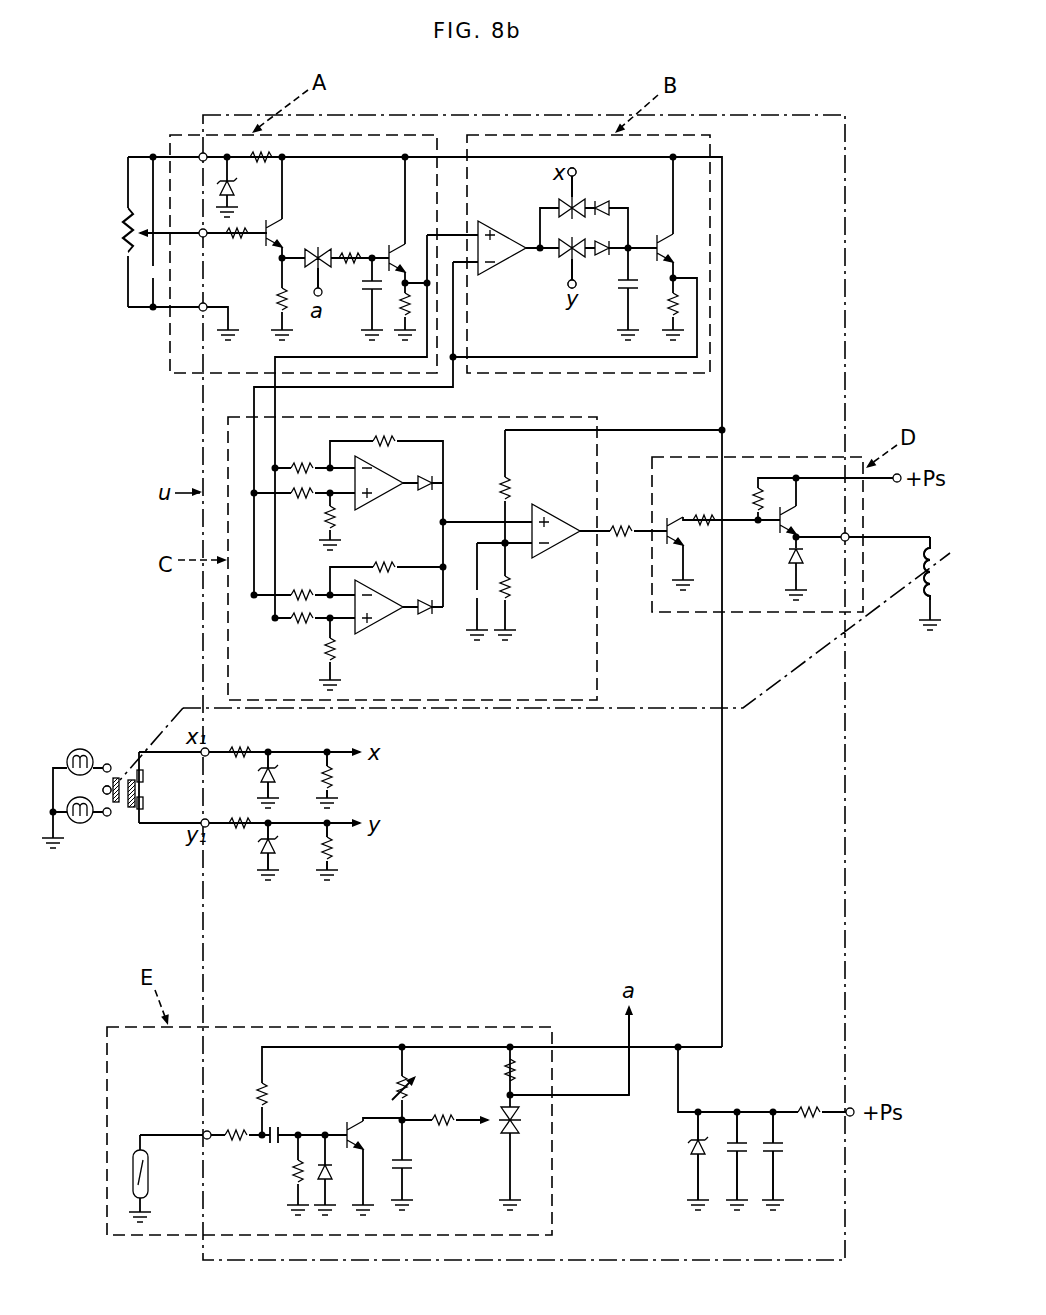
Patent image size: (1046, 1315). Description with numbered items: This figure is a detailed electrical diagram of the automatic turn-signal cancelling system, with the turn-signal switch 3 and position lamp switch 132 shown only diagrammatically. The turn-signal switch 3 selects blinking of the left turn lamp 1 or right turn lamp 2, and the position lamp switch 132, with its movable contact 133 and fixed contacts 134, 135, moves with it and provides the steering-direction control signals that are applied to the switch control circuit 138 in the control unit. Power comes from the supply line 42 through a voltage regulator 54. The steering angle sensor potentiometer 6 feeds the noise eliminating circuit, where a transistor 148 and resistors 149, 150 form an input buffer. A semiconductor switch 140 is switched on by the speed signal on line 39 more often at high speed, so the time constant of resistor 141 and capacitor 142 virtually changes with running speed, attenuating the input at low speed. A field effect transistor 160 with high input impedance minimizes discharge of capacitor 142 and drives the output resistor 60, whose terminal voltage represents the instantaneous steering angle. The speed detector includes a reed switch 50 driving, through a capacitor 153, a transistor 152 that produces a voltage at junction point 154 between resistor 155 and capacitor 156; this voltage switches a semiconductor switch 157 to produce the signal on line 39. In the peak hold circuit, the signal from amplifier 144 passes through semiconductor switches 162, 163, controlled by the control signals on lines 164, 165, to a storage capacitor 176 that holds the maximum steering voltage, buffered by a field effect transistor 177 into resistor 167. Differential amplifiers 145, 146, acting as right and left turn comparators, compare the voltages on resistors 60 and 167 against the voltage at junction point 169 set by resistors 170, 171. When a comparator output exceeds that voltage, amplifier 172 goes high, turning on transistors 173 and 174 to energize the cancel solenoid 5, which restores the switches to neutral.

The steering angle sensor potentiometer 6 is at (120, 247).
The transistor 148 is at (265, 229).
The resistor 149 is at (234, 238).
The resistor 150 is at (279, 300).
The semiconductor switch 140 is at (318, 250).
The resistor 141 is at (351, 252).
The field effect transistor 160 is at (389, 250).
The line 39 is at (320, 289).
The capacitor 142 is at (371, 292).
The output resistor 60 is at (405, 310).
The amplifier 144 is at (500, 213).
The line 164 is at (578, 172).
The semiconductor switch 162 is at (582, 204).
The field effect transistor 177 is at (658, 240).
The semiconductor switch 163 is at (565, 255).
The line 165 is at (568, 286).
The storage capacitor 176 is at (620, 290).
The resistor 167 is at (657, 309).
The resistor 170 is at (500, 483).
The amplifier 172 is at (546, 506).
The differential amplifier 145 is at (376, 500).
The differential amplifier 146 is at (392, 625).
The junction point 169 is at (510, 548).
The resistor 171 is at (512, 592).
The transistor 173 is at (668, 520).
The transistor 174 is at (775, 540).
The cancel solenoid 5 is at (935, 542).
The left turn lamp 1 is at (74, 752).
The right turn lamp 2 is at (83, 824).
The position lamp switch 132 is at (125, 770).
The movable contact 133 is at (132, 810).
The fixed contact 134 is at (144, 776).
The fixed contact 135 is at (144, 804).
The turn-signal switch 3 is at (117, 810).
The switch control circuit 138 is at (301, 811).
The reed switch 50 is at (150, 1180).
The capacitor 153 is at (272, 1148).
The transistor 152 is at (345, 1125).
The resistor 155 is at (412, 1095).
The junction point 154 is at (410, 1124).
The capacitor 156 is at (415, 1170).
The semiconductor switch 157 is at (524, 1126).
The power supply line 42 is at (838, 1106).
The voltage regulator 54 is at (765, 1156).